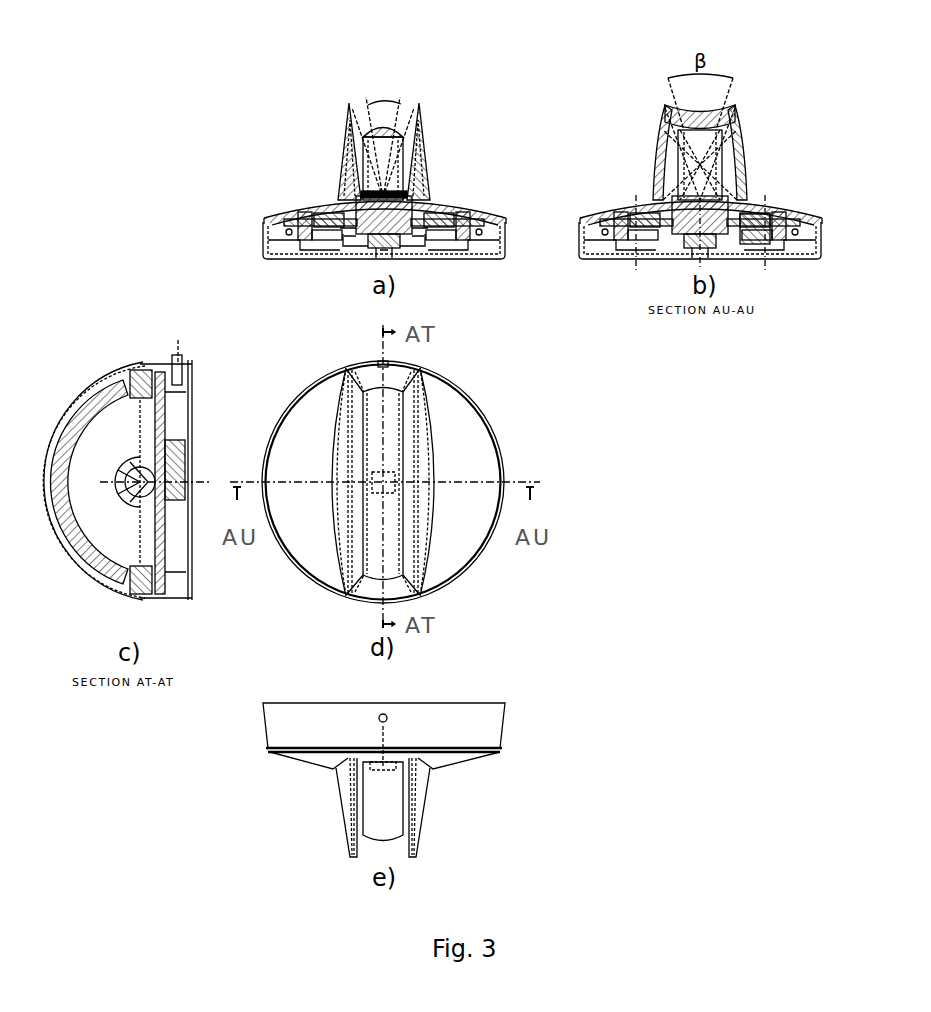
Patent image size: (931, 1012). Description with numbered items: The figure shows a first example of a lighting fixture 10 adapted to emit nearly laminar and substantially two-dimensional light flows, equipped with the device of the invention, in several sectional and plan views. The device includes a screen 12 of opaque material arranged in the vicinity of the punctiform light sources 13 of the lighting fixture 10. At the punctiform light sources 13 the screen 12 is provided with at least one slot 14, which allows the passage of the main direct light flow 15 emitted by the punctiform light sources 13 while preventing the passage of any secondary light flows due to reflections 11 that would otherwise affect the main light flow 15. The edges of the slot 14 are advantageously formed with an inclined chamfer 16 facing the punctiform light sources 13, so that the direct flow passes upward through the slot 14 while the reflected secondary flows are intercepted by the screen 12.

The lighting fixture 10 is at (365, 192).
The reflections 11 is at (658, 100).
The screen 12 is at (433, 170).
The punctiform light sources 13 is at (353, 245).
The slot 14 is at (393, 165).
The main direct light flow 15 is at (372, 105).
The inclined chamfer 16 is at (337, 150).